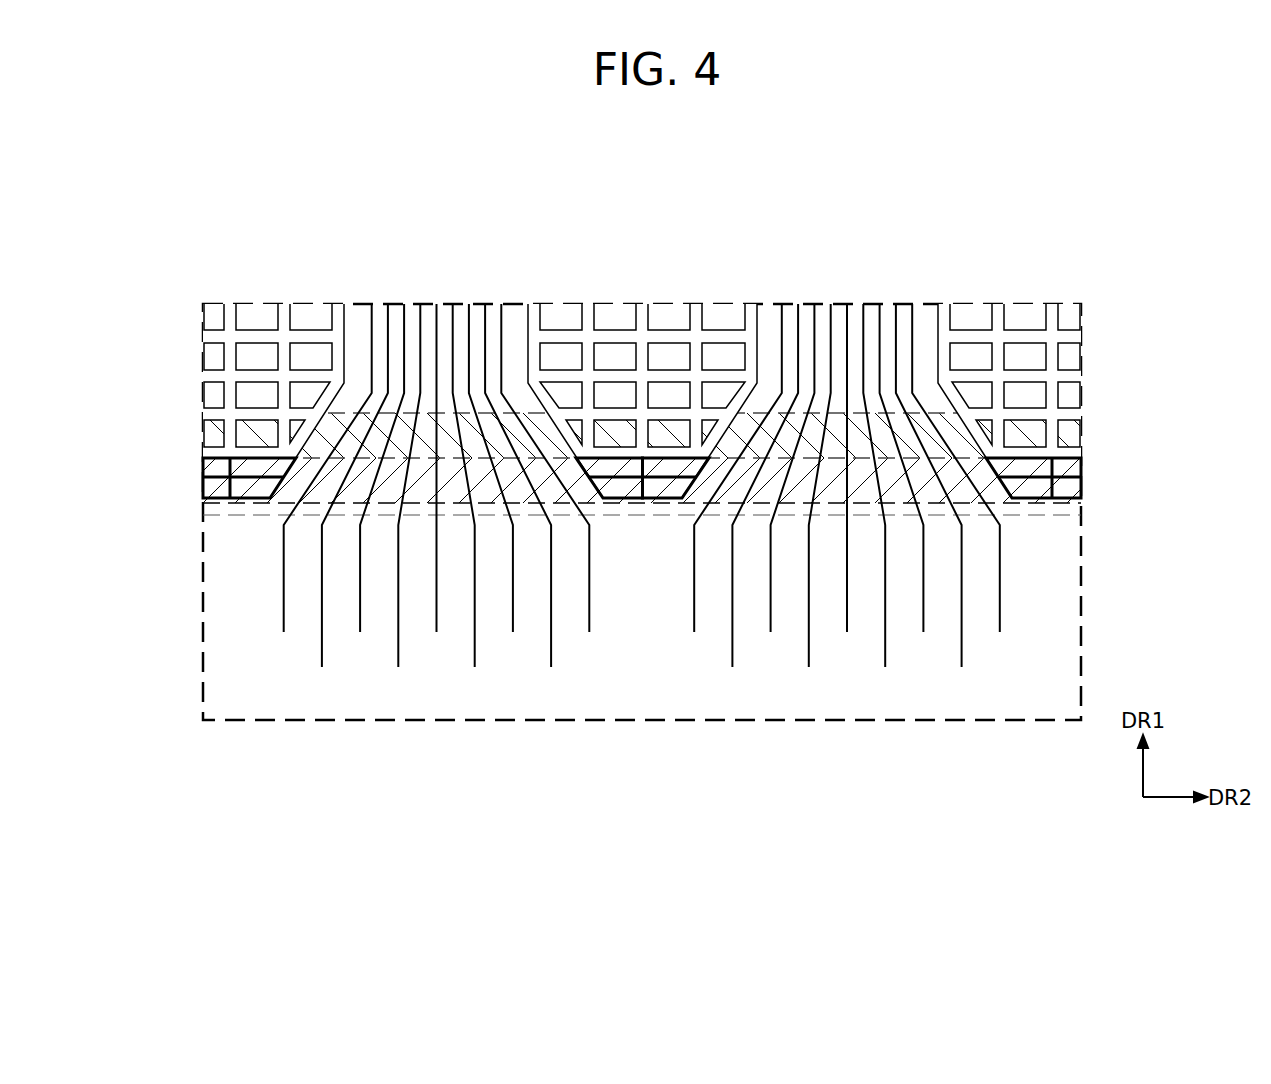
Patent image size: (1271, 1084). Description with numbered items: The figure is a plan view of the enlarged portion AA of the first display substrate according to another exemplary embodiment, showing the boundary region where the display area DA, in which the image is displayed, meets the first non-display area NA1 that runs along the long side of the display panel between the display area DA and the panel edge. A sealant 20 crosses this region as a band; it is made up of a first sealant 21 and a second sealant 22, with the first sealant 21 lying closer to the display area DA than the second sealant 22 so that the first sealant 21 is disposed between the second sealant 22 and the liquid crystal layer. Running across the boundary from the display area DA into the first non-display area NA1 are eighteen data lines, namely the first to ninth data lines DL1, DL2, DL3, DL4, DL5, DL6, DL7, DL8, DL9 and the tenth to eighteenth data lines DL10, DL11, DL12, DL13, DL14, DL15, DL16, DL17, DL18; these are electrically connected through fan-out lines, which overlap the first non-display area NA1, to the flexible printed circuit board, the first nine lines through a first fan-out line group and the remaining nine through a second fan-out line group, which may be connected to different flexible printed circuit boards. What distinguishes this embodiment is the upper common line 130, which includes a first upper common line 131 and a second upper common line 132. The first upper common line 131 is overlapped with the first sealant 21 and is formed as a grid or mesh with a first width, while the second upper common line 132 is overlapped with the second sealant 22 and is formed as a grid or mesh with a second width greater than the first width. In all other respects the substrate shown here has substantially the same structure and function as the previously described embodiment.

The sealant 20 is at (700, 458).
The first sealant 21 is at (676, 480).
The second sealant 22 is at (1083, 431).
The upper common line 130 is at (642, 537).
The first upper common line 131 is at (621, 500).
The second upper common line 132 is at (662, 500).
The portion AA is at (1094, 246).
The first non-display area NA1 is at (212, 513).
The display area DA is at (210, 578).
The first data line DL1 is at (317, 483).
The second data line DL2 is at (344, 500).
The third data line DL3 is at (371, 483).
The fourth data line DL4 is at (399, 500).
The fifth data line DL5 is at (434, 483).
The sixth data line DL6 is at (469, 500).
The seventh data line DL7 is at (501, 483).
The eighth data line DL8 is at (528, 500).
The ninth data line DL9 is at (555, 483).
The tenth data line DL10 is at (724, 483).
The eleventh data line DL11 is at (751, 500).
The twelfth data line DL12 is at (778, 483).
The thirteenth data line DL13 is at (809, 500).
The fourteenth data line DL14 is at (847, 483).
The fifteenth data line DL15 is at (881, 500).
The sixteenth data line DL16 is at (915, 483).
The seventeenth data line DL17 is at (942, 500).
The eighteenth data line DL18 is at (969, 483).